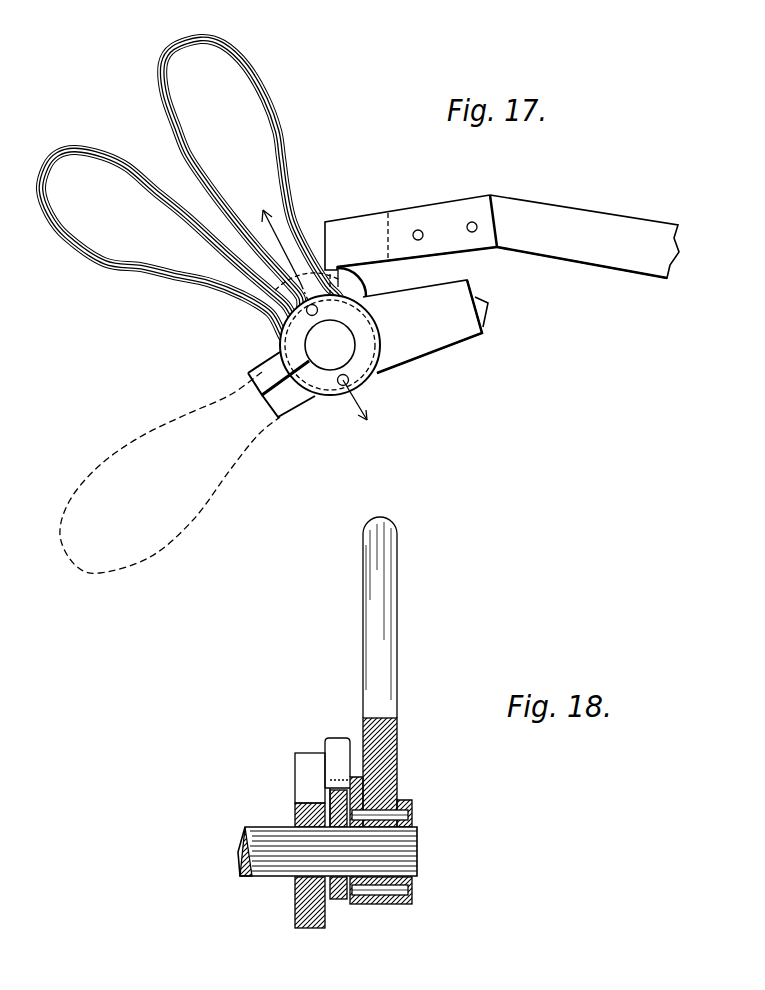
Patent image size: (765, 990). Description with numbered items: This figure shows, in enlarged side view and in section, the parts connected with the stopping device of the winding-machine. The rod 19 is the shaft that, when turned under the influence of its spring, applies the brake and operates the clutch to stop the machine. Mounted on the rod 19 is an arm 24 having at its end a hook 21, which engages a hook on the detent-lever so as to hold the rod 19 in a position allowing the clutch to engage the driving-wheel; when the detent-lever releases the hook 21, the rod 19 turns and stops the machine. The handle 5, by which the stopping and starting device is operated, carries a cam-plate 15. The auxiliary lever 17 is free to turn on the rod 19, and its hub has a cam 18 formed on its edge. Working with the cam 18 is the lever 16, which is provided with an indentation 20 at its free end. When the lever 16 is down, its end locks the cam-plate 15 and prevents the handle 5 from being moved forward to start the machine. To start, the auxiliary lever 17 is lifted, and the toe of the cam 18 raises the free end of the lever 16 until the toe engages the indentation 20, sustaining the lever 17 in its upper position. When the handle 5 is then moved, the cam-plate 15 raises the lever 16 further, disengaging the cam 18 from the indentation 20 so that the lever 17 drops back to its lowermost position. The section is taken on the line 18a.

In FIG. 17, the handle 5 is at (251, 183).
In FIG. 18, the handle 5 is at (398, 670).
In FIG. 17, the auxiliary lever 17 is at (168, 361).
In FIG. 18, the auxiliary lever 17 is at (337, 902).
In FIG. 17, the cam-plate 15 is at (265, 307).
In FIG. 18, the cam-plate 15 is at (360, 784).
In FIG. 17, the lever 16 is at (572, 237).
In FIG. 18, the lever 16 is at (295, 792).
In FIG. 17, the indentation 20 is at (337, 263).
In FIG. 17, the cam 18 is at (360, 286).
In FIG. 17, the section line 18a is at (371, 412).
In FIG. 17, the arm 24 is at (422, 326).
In FIG. 17, the hook 21 is at (484, 301).
In FIG. 17, the rod 19 is at (327, 334).
In FIG. 18, the rod 19 is at (418, 851).